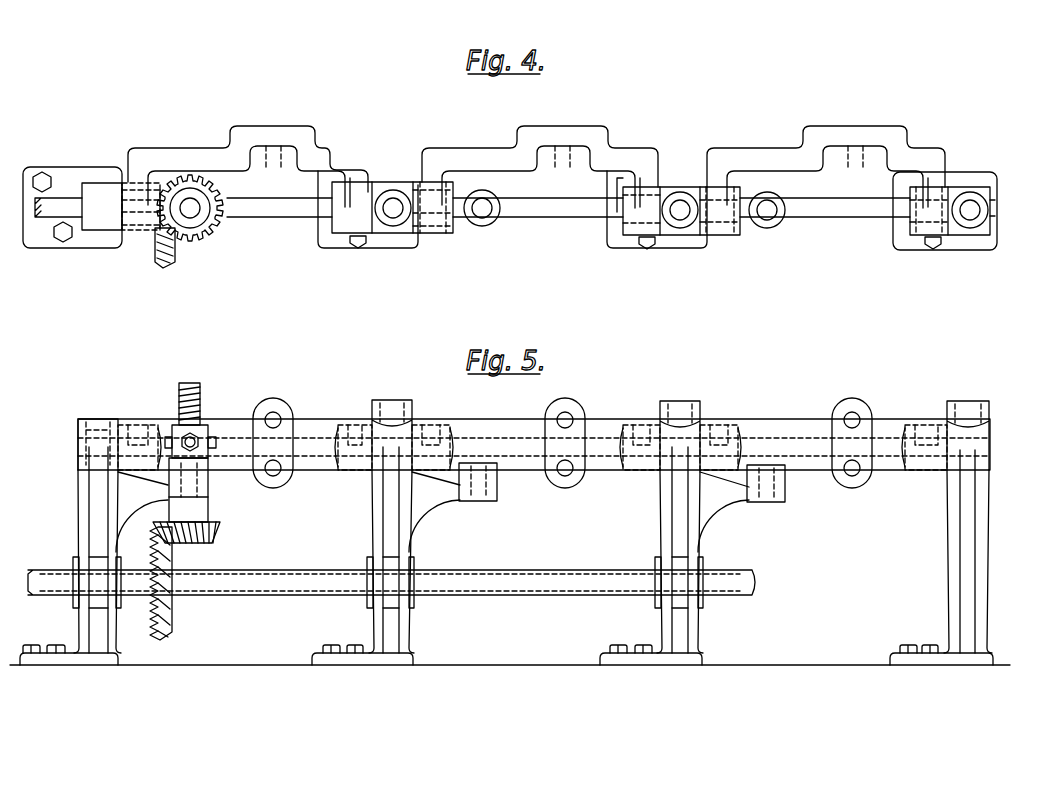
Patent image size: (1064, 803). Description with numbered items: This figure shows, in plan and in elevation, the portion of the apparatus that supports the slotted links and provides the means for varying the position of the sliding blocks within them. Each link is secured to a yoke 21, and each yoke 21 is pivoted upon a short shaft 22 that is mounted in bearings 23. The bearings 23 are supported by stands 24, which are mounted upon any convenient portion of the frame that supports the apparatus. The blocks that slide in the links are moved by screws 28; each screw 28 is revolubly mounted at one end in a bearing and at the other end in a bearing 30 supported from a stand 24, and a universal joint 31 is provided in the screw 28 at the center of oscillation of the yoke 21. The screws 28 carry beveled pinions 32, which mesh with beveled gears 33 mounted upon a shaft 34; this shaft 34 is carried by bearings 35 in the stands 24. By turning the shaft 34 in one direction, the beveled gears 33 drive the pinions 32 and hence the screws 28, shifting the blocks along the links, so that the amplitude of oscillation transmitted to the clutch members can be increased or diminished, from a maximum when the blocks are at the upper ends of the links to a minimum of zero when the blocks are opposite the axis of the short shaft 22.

In FIG. 4, the yoke 21 is at (318, 147).
In FIG. 4, the short shaft 22 is at (98, 205).
In FIG. 4, the bearing 23 is at (103, 231).
In FIG. 5, the bearing 23 is at (93, 422).
In FIG. 4, the stand 24 is at (393, 190).
In FIG. 5, the stand 24 is at (90, 517).
In FIG. 4, the screw 28 is at (194, 211).
In FIG. 5, the screw 28 is at (200, 403).
In FIG. 5, the bearing 30 is at (190, 487).
In FIG. 5, the universal joint 31 is at (199, 436).
In FIG. 4, the beveled pinion 32 is at (193, 242).
In FIG. 5, the beveled pinion 32 is at (219, 534).
In FIG. 5, the beveled gear 33 is at (171, 620).
In FIG. 4, the shaft 34 is at (568, 219).
In FIG. 5, the shaft 34 is at (284, 577).
In FIG. 5, the bearing 35 is at (76, 563).